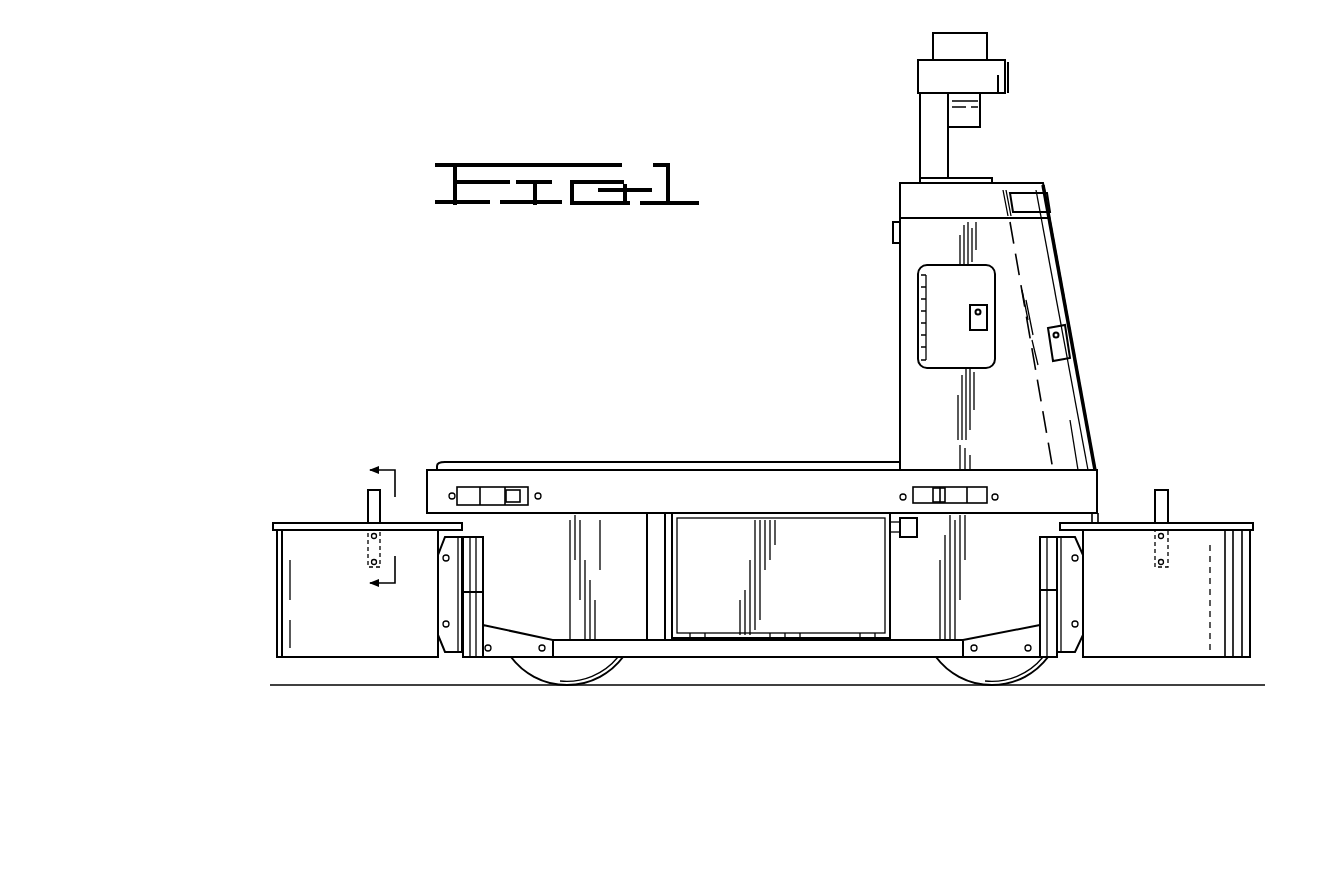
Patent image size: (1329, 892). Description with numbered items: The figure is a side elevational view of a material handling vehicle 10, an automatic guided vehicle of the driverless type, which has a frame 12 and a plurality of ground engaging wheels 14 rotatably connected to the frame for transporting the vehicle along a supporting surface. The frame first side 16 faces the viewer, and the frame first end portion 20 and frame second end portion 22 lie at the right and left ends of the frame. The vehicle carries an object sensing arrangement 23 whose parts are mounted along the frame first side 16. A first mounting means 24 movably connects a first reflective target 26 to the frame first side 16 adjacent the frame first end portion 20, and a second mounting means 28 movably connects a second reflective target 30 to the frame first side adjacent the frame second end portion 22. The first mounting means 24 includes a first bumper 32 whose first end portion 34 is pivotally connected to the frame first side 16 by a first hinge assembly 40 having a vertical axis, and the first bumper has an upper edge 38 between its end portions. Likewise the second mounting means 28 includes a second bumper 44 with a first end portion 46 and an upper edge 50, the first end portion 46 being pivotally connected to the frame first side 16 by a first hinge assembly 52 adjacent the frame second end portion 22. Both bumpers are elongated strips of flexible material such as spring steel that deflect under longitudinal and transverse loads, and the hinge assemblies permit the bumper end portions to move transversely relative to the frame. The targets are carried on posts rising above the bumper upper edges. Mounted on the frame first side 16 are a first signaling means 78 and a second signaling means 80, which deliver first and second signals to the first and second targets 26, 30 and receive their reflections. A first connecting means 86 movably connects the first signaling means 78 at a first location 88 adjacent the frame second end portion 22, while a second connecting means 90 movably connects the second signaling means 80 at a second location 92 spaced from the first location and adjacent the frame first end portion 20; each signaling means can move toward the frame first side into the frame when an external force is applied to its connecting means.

The material handling vehicle 10 is at (1100, 262).
The object sensing arrangement 23 is at (1178, 318).
The frame 12 is at (625, 478).
The frame second end portion 22 is at (437, 468).
The frame first end portion 20 is at (1097, 478).
The ground engaging wheels 14 is at (600, 665).
The frame first side 16 is at (929, 590).
The first mounting means 24 is at (1258, 598).
The first reflective target 26 is at (1170, 500).
The second mounting means 28 is at (275, 553).
The second reflective target 30 is at (368, 500).
The first bumper 32 is at (1255, 548).
The first bumper first end portion 34 is at (1128, 648).
The upper edge of first bumper 38 is at (1255, 525).
The first hinge assembly 40 is at (1052, 660).
The second bumper 44 is at (280, 603).
The second bumper first end portion 46 is at (363, 632).
The upper edge of second bumper 50 is at (275, 530).
The first hinge assembly of second bumper 52 is at (478, 660).
The first signaling means 78 is at (515, 490).
The second signaling means 80 is at (925, 487).
The first connecting means 86 is at (475, 487).
The first location 88 is at (492, 487).
The second connecting means 90 is at (975, 490).
The second location 92 is at (945, 487).